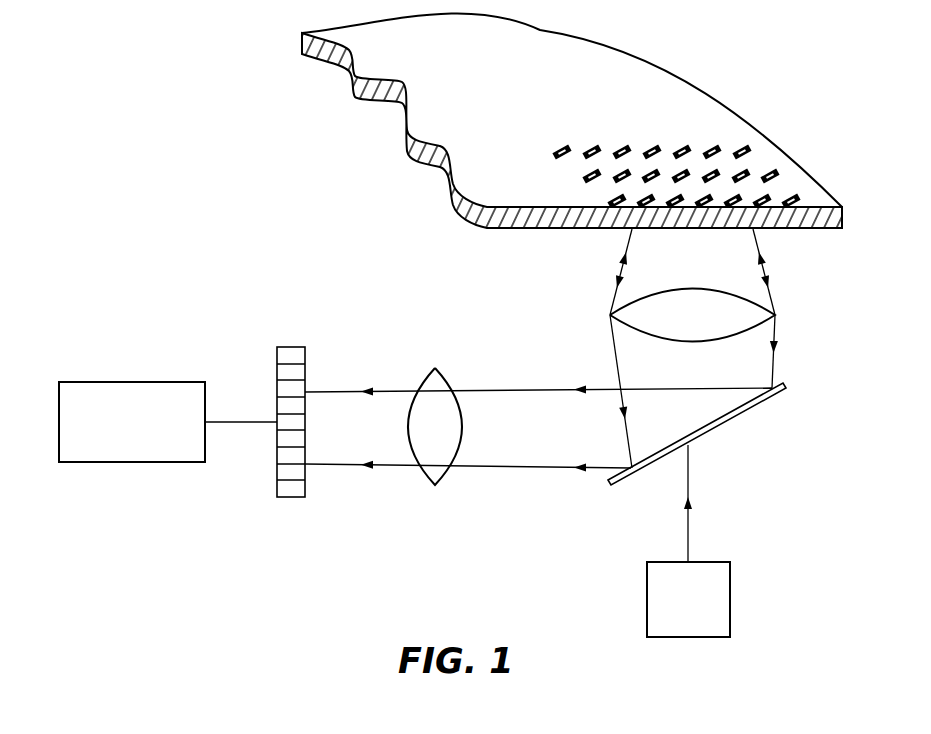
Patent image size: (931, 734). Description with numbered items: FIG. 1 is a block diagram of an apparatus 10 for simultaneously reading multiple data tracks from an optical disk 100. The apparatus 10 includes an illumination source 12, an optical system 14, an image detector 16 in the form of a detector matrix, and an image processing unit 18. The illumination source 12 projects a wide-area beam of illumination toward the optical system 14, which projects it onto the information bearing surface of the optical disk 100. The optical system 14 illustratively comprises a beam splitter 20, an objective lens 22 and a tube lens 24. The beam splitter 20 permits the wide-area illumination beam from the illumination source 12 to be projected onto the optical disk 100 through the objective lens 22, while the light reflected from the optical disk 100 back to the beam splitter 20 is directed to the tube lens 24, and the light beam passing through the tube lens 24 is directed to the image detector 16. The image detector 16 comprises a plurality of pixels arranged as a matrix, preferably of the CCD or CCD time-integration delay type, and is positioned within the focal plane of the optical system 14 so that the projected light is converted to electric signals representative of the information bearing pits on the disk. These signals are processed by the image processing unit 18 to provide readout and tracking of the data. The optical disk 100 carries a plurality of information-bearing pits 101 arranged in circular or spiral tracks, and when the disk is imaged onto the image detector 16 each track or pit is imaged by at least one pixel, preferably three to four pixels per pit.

The apparatus 10 is at (319, 278).
The illumination source 12 is at (731, 587).
The optical system 14 is at (543, 491).
The image detector 16 is at (293, 347).
The image processing unit 18 is at (206, 391).
The beam splitter 20 is at (732, 421).
The objective lens 22 is at (777, 314).
The tube lens 24 is at (435, 368).
The optical disk 100 is at (513, 86).
The information-bearing pits 101 is at (750, 143).